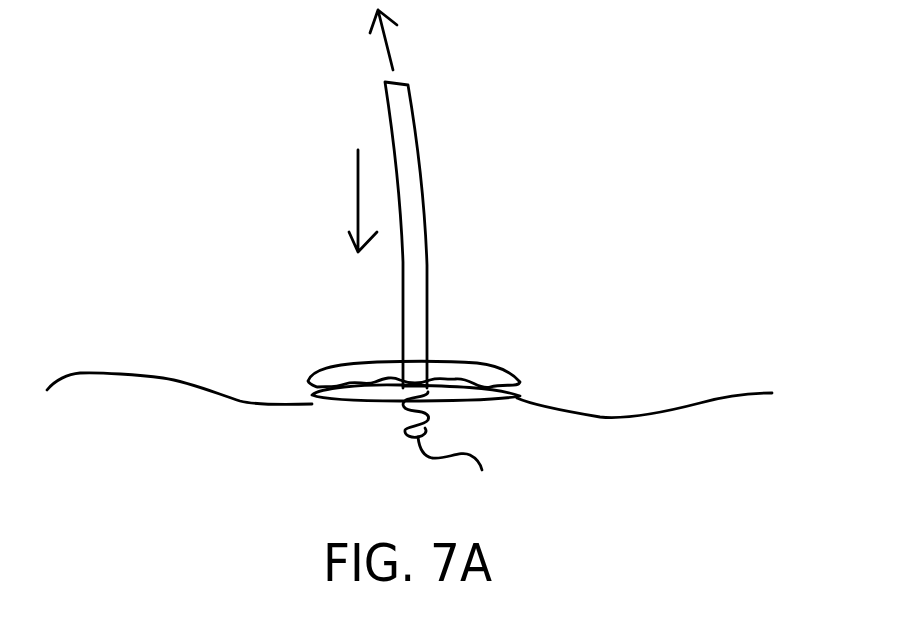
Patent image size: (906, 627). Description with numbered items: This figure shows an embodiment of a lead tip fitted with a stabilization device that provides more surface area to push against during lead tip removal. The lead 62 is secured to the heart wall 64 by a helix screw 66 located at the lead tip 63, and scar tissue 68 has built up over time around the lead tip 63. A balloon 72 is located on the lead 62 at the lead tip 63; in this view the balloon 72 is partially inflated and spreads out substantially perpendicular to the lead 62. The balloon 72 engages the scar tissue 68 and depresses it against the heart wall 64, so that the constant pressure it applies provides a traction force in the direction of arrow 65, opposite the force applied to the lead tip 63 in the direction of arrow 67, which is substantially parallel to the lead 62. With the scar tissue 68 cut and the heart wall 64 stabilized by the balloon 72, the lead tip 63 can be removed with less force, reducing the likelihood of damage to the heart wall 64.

The lead 62 is at (422, 180).
The lead tip 63 is at (400, 384).
The heart wall 64 is at (640, 417).
The arrow 65 is at (360, 193).
The helix screw 66 is at (449, 447).
The arrow 67 is at (390, 50).
The scar tissue 68 is at (517, 398).
The balloon 72 is at (480, 363).